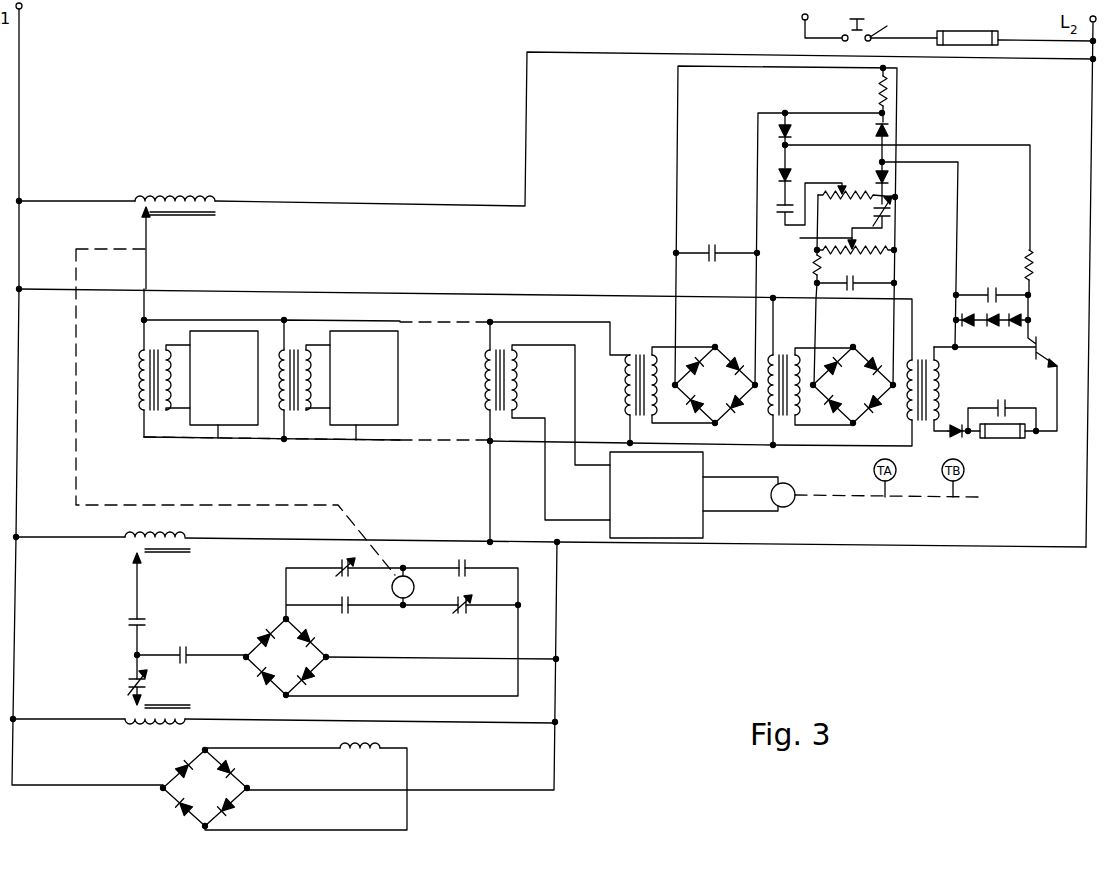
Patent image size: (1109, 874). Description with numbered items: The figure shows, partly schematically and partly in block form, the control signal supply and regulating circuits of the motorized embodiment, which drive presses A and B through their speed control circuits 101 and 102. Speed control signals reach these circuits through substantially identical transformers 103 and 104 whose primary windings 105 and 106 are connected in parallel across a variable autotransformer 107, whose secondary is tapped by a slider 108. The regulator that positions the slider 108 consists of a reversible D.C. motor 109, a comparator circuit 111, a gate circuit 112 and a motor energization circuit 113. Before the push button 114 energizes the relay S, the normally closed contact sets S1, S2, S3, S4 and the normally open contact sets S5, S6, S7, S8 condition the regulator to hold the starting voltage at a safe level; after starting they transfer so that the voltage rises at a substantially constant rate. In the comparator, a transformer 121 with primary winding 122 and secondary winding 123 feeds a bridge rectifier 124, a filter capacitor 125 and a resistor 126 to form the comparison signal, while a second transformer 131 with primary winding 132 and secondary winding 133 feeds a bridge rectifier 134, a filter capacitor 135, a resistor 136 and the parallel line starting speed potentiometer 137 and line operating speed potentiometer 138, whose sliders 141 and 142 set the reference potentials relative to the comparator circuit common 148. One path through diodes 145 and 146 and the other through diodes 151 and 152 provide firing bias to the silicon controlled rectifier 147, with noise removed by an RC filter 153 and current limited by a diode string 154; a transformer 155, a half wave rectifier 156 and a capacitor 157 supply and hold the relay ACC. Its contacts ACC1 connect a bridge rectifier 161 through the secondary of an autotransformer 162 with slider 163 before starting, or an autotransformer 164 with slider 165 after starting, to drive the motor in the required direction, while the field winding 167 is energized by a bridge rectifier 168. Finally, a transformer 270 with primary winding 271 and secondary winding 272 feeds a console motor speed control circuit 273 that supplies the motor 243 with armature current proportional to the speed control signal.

The speed control circuit 101 is at (216, 440).
The speed control circuit 102 is at (356, 442).
The transformer 103 is at (186, 363).
The transformer 104 is at (322, 384).
The primary winding 105 is at (140, 380).
The primary winding 106 is at (282, 394).
The variable autotransformer 107 is at (183, 200).
The slider 108 is at (150, 224).
The reversible D.C. motor 109 is at (412, 580).
The comparator circuit 111 is at (878, 226).
The gate circuit 112 is at (1010, 360).
The motor energization circuit 113 is at (444, 666).
The push button 114 is at (889, 36).
The transformer 121 is at (652, 376).
The primary winding 122 is at (627, 366).
The secondary winding 123 is at (665, 421).
The bridge rectifier 124 is at (729, 396).
The filter capacitor 125 is at (713, 247).
The resistor 126 is at (878, 93).
The transformer 131 is at (792, 373).
The primary winding 132 is at (800, 399).
The secondary winding 133 is at (805, 402).
The bridge rectifier 134 is at (867, 396).
The filter capacitor 135 is at (848, 291).
The resistor 136 is at (813, 270).
The line starting speed potentiometer 137 is at (856, 262).
The line operating speed potentiometer 138 is at (858, 210).
The slider 141 is at (813, 242).
The slider 142 is at (843, 182).
The diode 145 is at (791, 132).
The diode 146 is at (890, 178).
The silicon controlled rectifier 147 is at (1038, 341).
The comparator circuit common 148 is at (733, 63).
The diode 151 is at (791, 176).
The diode 152 is at (890, 131).
The RC filter 153 is at (997, 284).
The diode string 154 is at (1027, 318).
The transformer 155 is at (930, 361).
The half wave rectifier 156 is at (955, 425).
The capacitor 157 is at (1003, 400).
The bridge rectifier 161 is at (300, 668).
The autotransformer 162 is at (215, 690).
The slider 163 is at (135, 706).
The autotransformer 164 is at (214, 525).
The slider 165 is at (134, 558).
The field winding 167 is at (362, 752).
The bridge rectifier 168 is at (219, 800).
The motor 243 is at (794, 505).
The transformer 270 is at (532, 421).
The primary winding 271 is at (488, 378).
The secondary winding 272 is at (500, 343).
The console motor speed control circuit 273 is at (703, 532).
The relay S is at (995, 36).
The normally closed contact set S1 is at (890, 216).
The normally closed contact set S2 is at (132, 679).
The normally closed contact set S3 is at (344, 566).
The normally closed contact set S4 is at (466, 613).
The normally open contact set S5 is at (779, 208).
The normally open contact set S6 is at (132, 620).
The normally open contact set S7 is at (344, 602).
The normally open contact set S8 is at (467, 568).
The relay ACC is at (1002, 440).
The normally open contact set ACC1 is at (184, 632).